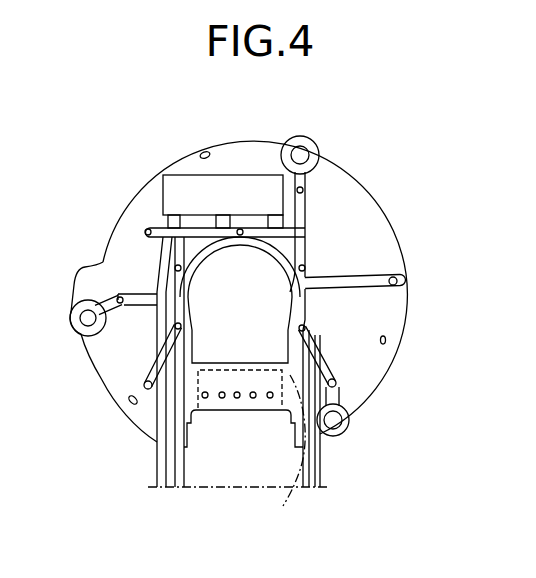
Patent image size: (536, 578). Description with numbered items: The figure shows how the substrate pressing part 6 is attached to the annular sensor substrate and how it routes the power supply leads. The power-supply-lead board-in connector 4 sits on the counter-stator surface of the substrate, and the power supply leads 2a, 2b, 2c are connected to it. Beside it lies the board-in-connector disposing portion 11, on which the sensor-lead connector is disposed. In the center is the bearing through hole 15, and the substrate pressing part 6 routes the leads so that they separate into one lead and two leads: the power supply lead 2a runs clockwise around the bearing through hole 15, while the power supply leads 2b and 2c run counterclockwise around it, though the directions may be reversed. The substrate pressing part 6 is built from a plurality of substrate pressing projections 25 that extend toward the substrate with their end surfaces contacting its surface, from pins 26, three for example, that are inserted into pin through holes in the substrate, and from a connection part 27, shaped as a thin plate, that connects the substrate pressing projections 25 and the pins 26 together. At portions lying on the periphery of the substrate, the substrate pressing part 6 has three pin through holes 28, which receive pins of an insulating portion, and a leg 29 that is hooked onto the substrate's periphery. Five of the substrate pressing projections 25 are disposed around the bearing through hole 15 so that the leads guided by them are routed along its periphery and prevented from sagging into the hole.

The power supply lead 2a is at (313, 466).
The power supply lead 2b is at (178, 448).
The power supply lead 2c is at (167, 477).
The power-supply-lead board-in connector 4 is at (218, 195).
The substrate pressing part 6 is at (305, 213).
The board-in-connector disposing portion 11 is at (289, 455).
The bearing through hole 15 is at (172, 283).
The substrate pressing projections 25 is at (238, 230).
The pins 26 is at (145, 232).
The connection part 27 is at (317, 360).
The pin through holes 28 is at (302, 153).
The leg 29 is at (407, 279).